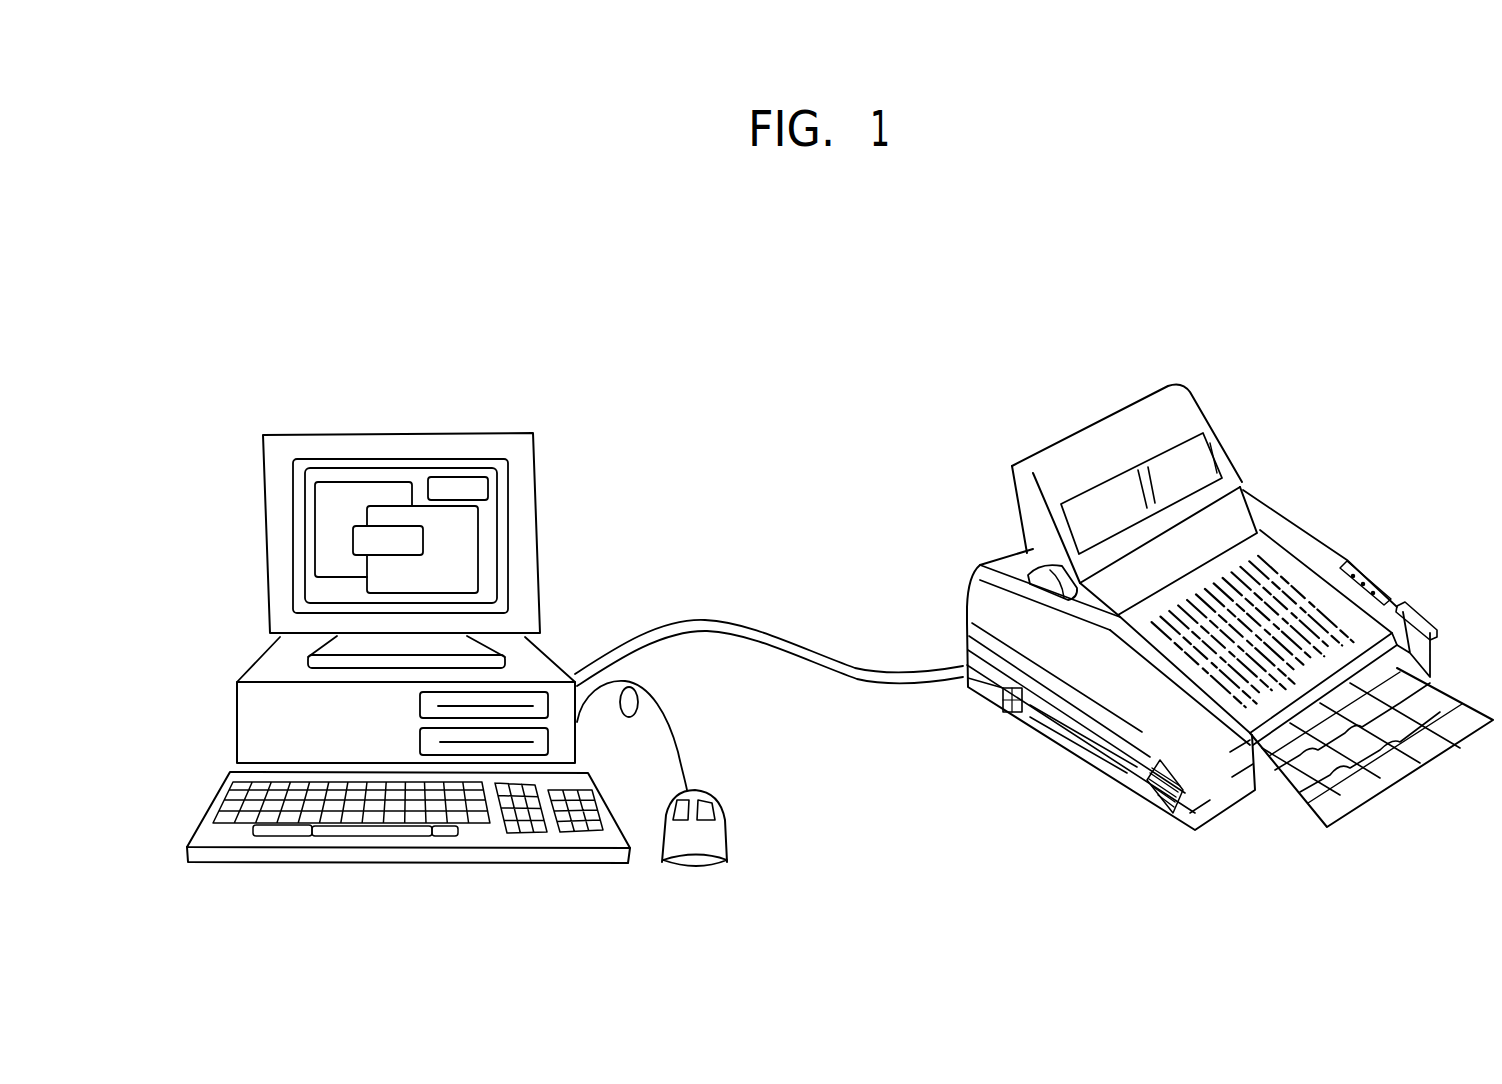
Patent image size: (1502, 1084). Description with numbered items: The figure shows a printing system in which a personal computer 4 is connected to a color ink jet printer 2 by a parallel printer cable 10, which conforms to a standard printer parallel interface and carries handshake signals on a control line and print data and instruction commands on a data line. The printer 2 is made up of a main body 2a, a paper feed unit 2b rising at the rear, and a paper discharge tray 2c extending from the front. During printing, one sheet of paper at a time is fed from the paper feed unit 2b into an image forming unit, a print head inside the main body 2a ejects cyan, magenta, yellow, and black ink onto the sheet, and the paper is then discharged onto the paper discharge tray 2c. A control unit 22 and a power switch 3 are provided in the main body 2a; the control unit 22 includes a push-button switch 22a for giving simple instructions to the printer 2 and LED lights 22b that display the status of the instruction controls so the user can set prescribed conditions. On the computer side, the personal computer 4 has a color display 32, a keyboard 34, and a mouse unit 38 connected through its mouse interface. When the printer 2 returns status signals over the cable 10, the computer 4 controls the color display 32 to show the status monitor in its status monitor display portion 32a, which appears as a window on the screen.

The color ink jet printer 2 is at (1023, 359).
The main body 2a is at (1072, 724).
The paper feed unit 2b is at (1163, 423).
The paper discharge tray 2c is at (1412, 760).
The power switch 3 is at (1003, 717).
The personal computer 4 is at (536, 340).
The parallel printer cable 10 is at (788, 638).
The control unit 22 is at (1345, 560).
The push-button switch 22a is at (1397, 604).
The LED lights 22b is at (1362, 566).
The color display 32 is at (540, 495).
The status monitor display portion 32a is at (362, 544).
The keyboard 34 is at (545, 857).
The mouse unit 38 is at (707, 808).